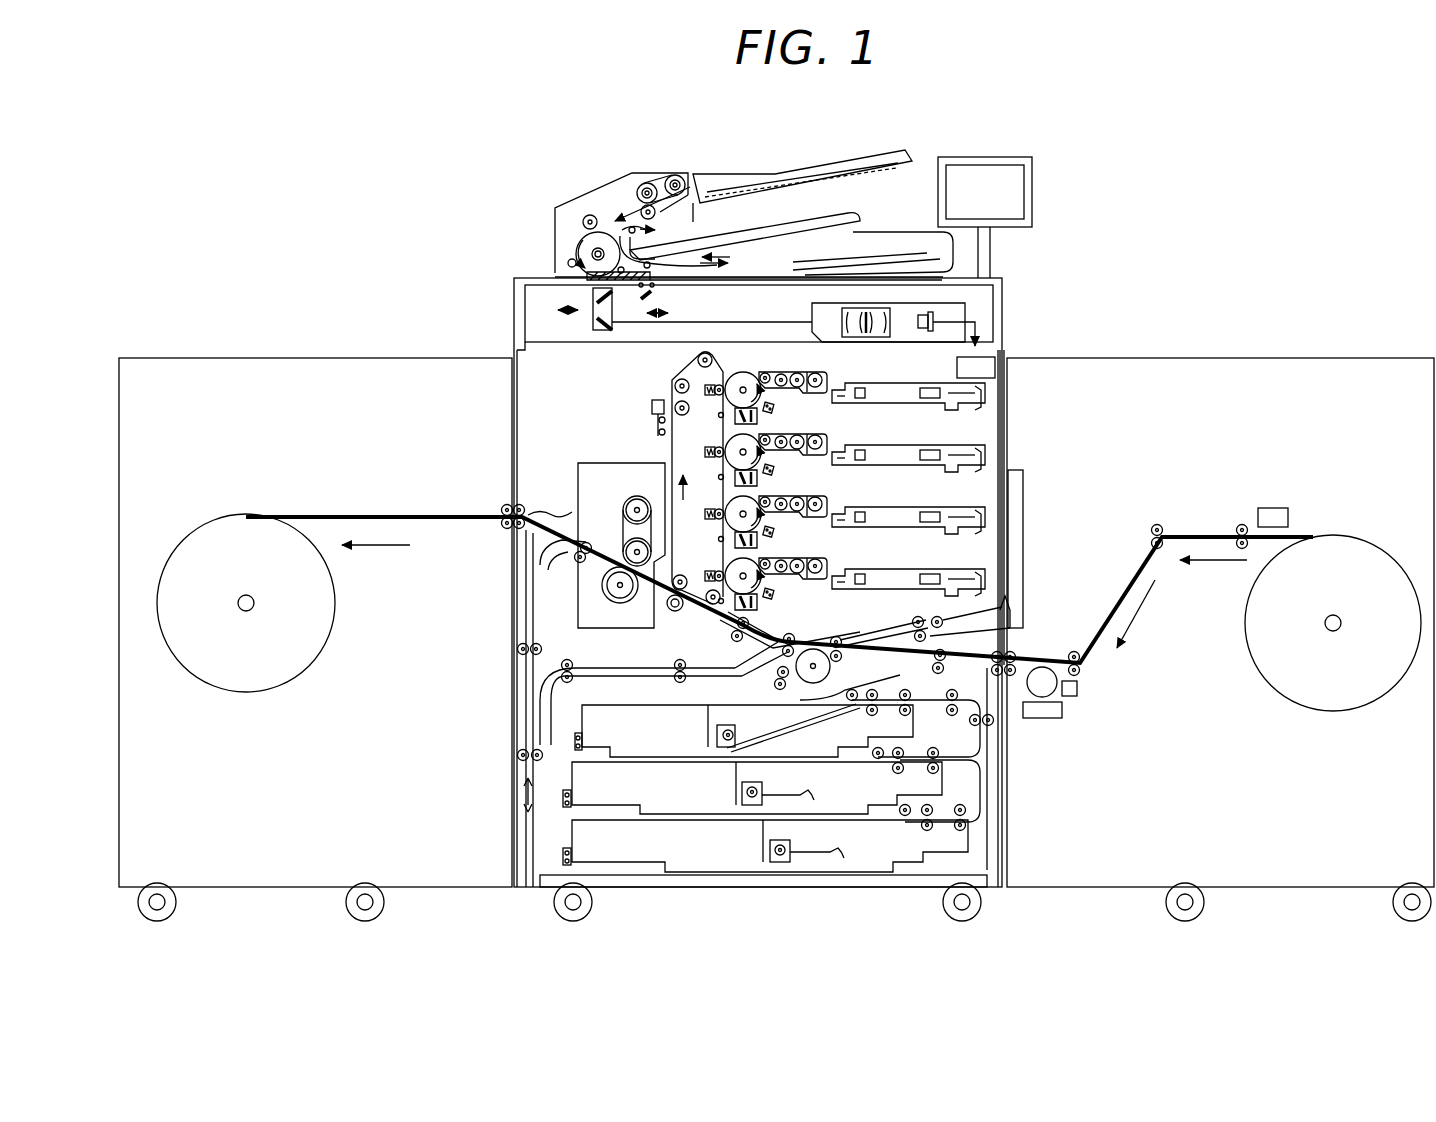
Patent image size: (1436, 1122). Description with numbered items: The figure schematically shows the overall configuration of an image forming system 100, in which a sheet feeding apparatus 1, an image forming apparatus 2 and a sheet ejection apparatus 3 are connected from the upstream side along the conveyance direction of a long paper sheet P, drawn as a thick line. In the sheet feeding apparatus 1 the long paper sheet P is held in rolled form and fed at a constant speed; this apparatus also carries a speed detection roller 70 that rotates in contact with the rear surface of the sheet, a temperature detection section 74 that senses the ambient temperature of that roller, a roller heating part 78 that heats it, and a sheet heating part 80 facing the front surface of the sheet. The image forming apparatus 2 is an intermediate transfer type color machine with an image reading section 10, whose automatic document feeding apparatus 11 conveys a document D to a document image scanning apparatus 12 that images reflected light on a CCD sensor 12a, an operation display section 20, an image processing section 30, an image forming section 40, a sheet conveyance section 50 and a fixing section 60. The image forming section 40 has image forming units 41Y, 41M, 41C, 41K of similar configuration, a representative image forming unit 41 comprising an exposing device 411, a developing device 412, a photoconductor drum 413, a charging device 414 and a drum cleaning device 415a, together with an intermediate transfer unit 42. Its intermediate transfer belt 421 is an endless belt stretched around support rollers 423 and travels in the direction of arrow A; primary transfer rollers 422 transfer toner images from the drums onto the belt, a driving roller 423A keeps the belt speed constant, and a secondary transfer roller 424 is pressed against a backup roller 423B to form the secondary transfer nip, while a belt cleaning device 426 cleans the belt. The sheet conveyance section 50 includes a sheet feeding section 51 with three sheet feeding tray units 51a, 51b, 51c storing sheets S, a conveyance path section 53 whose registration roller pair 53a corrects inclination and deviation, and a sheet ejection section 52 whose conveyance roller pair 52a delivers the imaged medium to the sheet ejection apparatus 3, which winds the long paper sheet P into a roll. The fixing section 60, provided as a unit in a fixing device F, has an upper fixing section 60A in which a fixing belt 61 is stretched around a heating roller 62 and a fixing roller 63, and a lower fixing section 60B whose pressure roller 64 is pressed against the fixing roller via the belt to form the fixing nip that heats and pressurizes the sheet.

The image forming system 100 is at (1158, 113).
The sheet feeding apparatus 1 is at (1375, 358).
The image forming apparatus 2 is at (746, 157).
The sheet ejection apparatus 3 is at (378, 358).
The image reading section 10 is at (751, 248).
The automatic document feeding apparatus 11 is at (555, 230).
The document image scanning apparatus 12 is at (543, 278).
The CCD sensor 12a is at (965, 303).
The operation display section 20 is at (976, 157).
The image processing section 30 is at (995, 366).
The image forming section 40 is at (790, 695).
The image forming unit 41 is at (797, 695).
The image forming unit for Y component 41Y is at (848, 412).
The image forming unit for M component 41M is at (848, 474).
The image forming unit for C component 41C is at (848, 536).
The image forming unit for K component 41K is at (1003, 583).
The exposing device 411 is at (885, 384).
The developing device 412 is at (826, 378).
The photoconductor drum 413 is at (747, 370).
The charging device 414 is at (772, 410).
The drum cleaning device 415a is at (734, 426).
The intermediate transfer unit 42 is at (597, 483).
The intermediate transfer belt 421 is at (672, 438).
The primary transfer roller 422 is at (706, 363).
The support roller 423 is at (698, 357).
The driving roller 423A is at (735, 622).
The backup roller 423B is at (673, 613).
The secondary transfer roller 424 is at (537, 651).
The belt cleaning device 426 is at (657, 407).
The sheet conveyance section 50 is at (768, 757).
The sheet feeding section 51 is at (713, 777).
The sheet feeding tray unit 51a is at (582, 727).
The sheet feeding tray unit 51b is at (572, 784).
The sheet feeding tray unit 51c is at (572, 842).
The sheet ejection section 52 is at (532, 663).
The conveyance roller pair 52a is at (595, 513).
The conveyance path section 53 is at (833, 638).
The registration roller pair 53a is at (756, 624).
The fixing section 60 is at (555, 525).
The upper fixing section 60A is at (567, 539).
The lower fixing section 60B is at (541, 601).
The fixing belt 61 is at (623, 538).
The heating roller 62 is at (608, 508).
The fixing roller 63 is at (580, 553).
The pressure roller 64 is at (600, 615).
The speed detection roller 70 is at (1045, 667).
The temperature detection section 74 is at (1078, 689).
The roller heating part 78 is at (1062, 710).
The sheet heating part 80 is at (1265, 508).
The long paper sheet P is at (278, 517).
The sheet S is at (795, 722).
The document D is at (818, 180).
The arrow A is at (693, 487).
The fixing device F is at (576, 475).